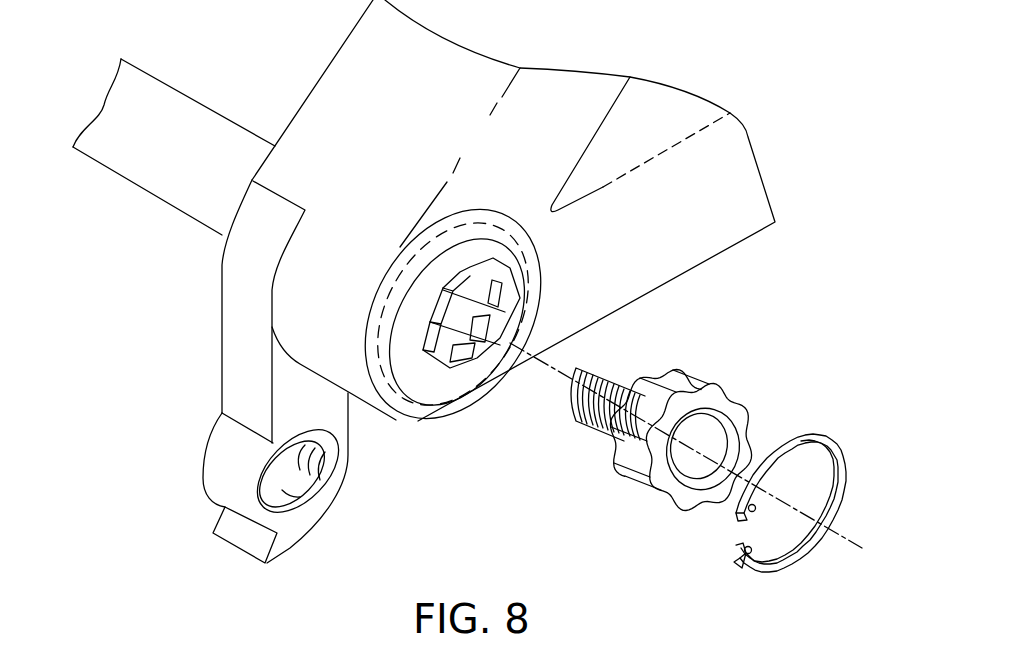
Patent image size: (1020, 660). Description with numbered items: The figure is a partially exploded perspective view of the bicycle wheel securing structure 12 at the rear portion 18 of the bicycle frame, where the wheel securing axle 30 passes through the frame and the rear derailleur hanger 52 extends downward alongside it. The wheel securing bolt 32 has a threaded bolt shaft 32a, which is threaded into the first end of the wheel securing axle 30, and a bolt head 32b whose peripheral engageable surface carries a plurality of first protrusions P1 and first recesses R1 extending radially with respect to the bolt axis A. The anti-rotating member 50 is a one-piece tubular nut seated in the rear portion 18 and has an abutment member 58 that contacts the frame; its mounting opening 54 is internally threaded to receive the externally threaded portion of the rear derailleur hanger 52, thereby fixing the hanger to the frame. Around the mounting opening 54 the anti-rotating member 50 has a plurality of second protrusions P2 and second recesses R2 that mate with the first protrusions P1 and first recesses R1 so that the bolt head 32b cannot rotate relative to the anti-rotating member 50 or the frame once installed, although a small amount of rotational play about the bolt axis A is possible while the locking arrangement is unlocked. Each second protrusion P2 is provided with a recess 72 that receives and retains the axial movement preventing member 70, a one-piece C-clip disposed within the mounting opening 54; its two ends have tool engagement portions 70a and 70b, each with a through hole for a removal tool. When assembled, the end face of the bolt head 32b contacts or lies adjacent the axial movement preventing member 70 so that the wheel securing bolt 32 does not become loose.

The bicycle wheel securing structure 12 is at (541, 524).
The rear portion 18 is at (702, 270).
The wheel securing axle 30 is at (198, 100).
The wheel securing bolt 32 is at (658, 453).
The bolt shaft 32a is at (592, 412).
The bolt head 32b is at (671, 497).
The anti-rotating member 50 is at (392, 264).
The rear derailleur hanger 52 is at (212, 358).
The mounting opening 54 is at (466, 358).
The abutment member 58 is at (540, 243).
The axial movement preventing member 70 is at (775, 494).
The tool engagement portion 70a is at (740, 521).
The tool engagement portion 70b is at (744, 566).
The recess 72 is at (500, 303).
The first protrusion P1 is at (620, 453).
The second protrusion P2 is at (520, 307).
The first recess R1 is at (670, 372).
The second recess R2 is at (440, 350).
The bolt axis A is at (838, 537).